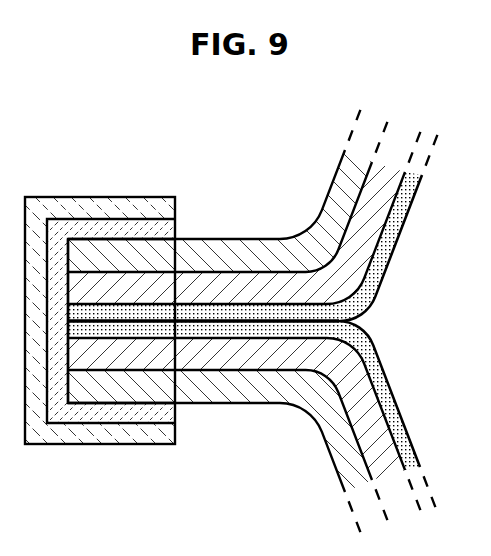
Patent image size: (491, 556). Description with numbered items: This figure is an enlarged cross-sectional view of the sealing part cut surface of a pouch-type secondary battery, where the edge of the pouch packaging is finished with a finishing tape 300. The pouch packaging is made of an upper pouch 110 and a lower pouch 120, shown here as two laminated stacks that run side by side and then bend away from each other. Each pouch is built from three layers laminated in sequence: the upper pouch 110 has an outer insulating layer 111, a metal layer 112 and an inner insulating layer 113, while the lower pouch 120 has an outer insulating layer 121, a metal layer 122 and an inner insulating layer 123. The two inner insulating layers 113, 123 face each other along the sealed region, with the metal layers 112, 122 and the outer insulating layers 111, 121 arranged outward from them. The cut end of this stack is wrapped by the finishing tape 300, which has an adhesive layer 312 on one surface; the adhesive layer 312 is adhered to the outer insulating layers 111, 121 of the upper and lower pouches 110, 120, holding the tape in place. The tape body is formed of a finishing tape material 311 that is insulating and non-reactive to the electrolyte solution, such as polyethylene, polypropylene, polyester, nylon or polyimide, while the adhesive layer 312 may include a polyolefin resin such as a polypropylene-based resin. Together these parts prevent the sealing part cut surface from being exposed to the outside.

The upper pouch 110 is at (252, 215).
The outer insulating layer 111 is at (342, 170).
The metal layer 112 is at (370, 222).
The inner insulating layer 113 is at (368, 280).
The lower pouch 120 is at (251, 426).
The outer insulating layer 121 is at (345, 468).
The metal layer 122 is at (368, 418).
The inner insulating layer 123 is at (372, 362).
The finishing tape 300 is at (100, 359).
The finishing tape material 311 is at (75, 437).
The adhesive layer 312 is at (118, 417).